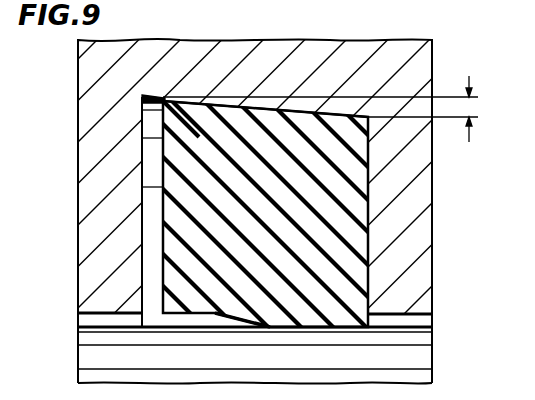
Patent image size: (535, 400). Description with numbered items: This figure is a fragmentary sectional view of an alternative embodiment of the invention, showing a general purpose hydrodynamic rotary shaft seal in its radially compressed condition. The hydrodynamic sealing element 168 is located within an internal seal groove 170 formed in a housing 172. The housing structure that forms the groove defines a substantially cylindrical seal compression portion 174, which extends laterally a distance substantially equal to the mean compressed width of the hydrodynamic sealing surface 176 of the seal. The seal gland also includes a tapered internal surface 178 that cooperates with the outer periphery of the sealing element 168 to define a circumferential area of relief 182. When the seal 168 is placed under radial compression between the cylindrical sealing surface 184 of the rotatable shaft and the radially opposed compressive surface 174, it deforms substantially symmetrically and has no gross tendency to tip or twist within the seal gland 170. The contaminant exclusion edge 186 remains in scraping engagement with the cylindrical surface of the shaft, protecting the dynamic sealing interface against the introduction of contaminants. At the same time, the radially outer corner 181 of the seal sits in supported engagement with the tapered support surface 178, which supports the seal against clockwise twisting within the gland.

The hydrodynamic sealing element 168 is at (200, 282).
The internal seal groove 170 is at (148, 287).
The housing 172 is at (277, 63).
The seal compression portion 174 is at (333, 114).
The hydrodynamic sealing surface 176 is at (305, 331).
The tapered internal surface 178 is at (200, 105).
The radially outer corner 181 is at (163, 96).
The circumferential area of relief 182 is at (470, 105).
The cylindrical sealing surface 184 is at (420, 327).
The contaminant exclusion edge 186 is at (372, 333).